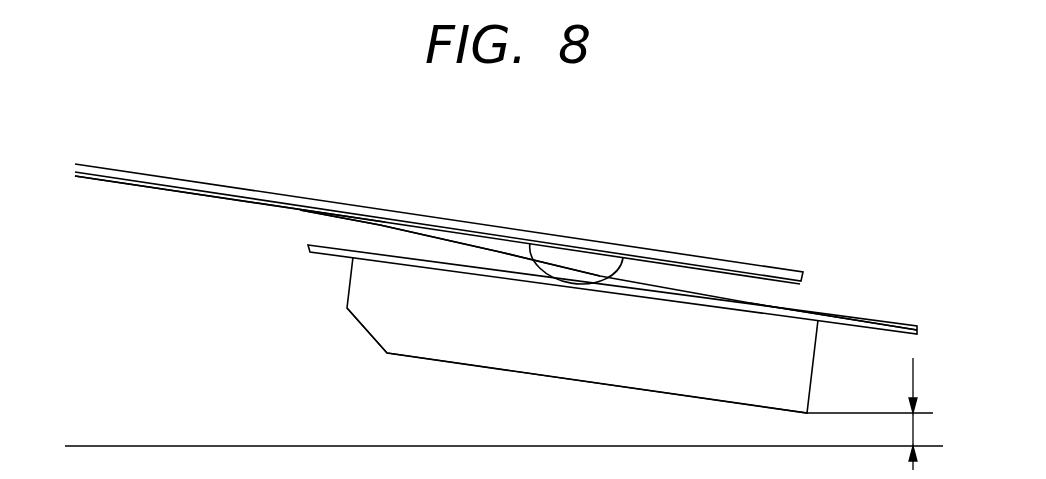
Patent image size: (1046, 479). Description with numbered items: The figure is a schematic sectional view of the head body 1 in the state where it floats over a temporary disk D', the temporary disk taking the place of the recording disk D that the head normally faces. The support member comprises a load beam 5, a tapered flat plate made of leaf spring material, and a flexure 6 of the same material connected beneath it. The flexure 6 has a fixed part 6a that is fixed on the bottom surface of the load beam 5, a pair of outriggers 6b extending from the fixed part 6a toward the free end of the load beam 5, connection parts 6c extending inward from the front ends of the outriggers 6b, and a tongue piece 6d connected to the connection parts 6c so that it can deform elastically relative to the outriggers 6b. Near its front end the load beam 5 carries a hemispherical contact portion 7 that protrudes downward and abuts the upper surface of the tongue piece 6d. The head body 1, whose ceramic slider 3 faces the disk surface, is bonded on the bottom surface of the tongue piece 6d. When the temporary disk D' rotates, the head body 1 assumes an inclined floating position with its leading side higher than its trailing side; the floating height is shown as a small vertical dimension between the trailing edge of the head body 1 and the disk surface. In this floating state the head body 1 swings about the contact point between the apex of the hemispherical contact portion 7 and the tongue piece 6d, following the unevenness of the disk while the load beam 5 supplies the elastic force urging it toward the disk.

The head body 1 is at (687, 392).
The slider 3 is at (577, 360).
The load beam 5 is at (710, 267).
The flexure 6 is at (142, 188).
The fixed part 6a is at (230, 199).
The outriggers 6b is at (495, 252).
The connection parts 6c is at (880, 320).
The tongue piece 6d is at (318, 255).
The hemispherical contact portion 7 is at (570, 252).
The recording disk D is at (312, 453).